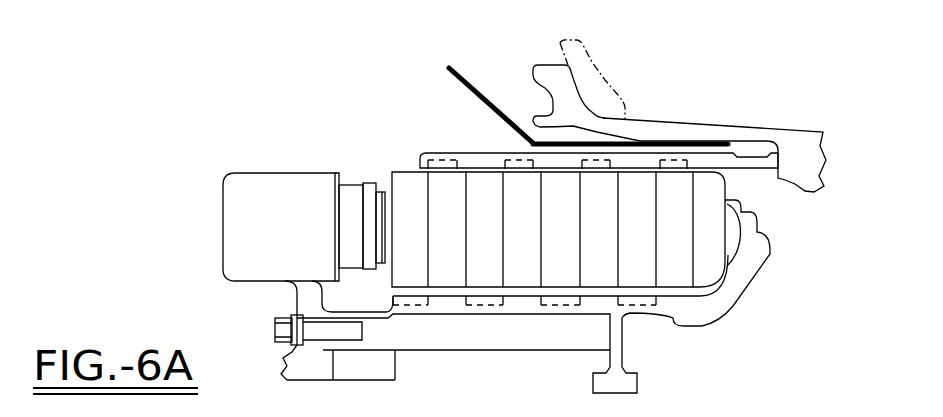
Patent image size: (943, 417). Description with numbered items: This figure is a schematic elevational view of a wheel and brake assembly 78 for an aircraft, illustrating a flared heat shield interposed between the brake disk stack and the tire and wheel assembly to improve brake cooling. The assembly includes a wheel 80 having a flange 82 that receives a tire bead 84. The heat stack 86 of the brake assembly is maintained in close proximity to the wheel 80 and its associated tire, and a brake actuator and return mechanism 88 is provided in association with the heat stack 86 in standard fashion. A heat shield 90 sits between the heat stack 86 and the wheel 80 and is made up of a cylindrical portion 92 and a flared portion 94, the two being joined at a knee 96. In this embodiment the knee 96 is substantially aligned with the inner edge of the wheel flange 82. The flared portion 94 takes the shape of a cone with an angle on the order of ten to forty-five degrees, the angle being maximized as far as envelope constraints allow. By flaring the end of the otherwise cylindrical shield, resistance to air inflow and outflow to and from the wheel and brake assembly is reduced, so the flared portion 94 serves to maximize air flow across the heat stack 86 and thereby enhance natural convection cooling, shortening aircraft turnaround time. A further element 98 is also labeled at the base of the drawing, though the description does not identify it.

The wheel and brake assembly 78 is at (277, 103).
The wheel 80 is at (693, 122).
The flange 82 is at (540, 64).
The tire bead 84 is at (607, 78).
The heat stack 86 is at (405, 165).
The brake actuator and return mechanism 88 is at (223, 222).
The heat shield 90 is at (430, 65).
The cylindrical portion 92 is at (646, 142).
The flared portion 94 is at (455, 80).
The knee 96 is at (535, 150).
The base bracket 98 is at (456, 365).